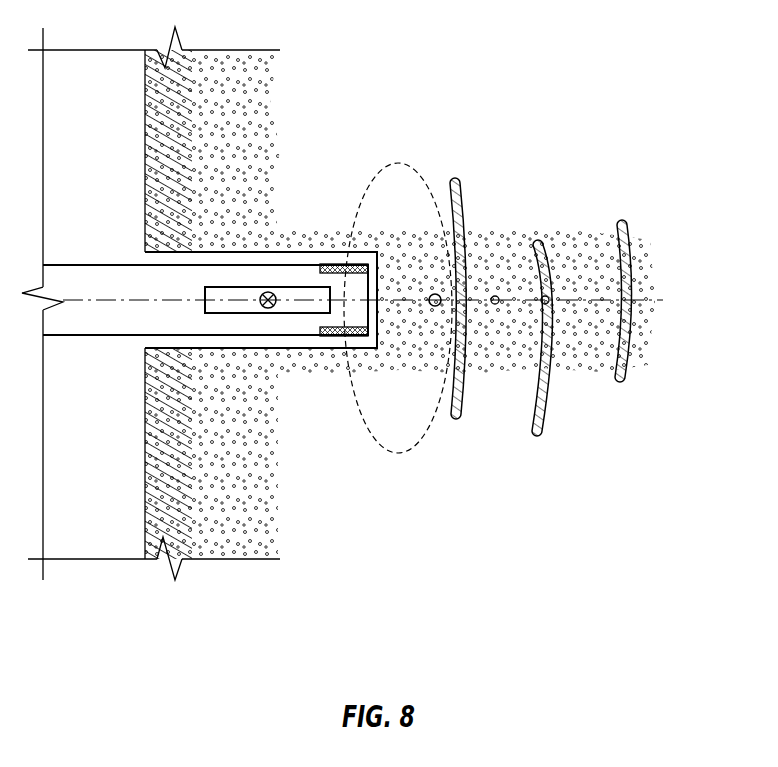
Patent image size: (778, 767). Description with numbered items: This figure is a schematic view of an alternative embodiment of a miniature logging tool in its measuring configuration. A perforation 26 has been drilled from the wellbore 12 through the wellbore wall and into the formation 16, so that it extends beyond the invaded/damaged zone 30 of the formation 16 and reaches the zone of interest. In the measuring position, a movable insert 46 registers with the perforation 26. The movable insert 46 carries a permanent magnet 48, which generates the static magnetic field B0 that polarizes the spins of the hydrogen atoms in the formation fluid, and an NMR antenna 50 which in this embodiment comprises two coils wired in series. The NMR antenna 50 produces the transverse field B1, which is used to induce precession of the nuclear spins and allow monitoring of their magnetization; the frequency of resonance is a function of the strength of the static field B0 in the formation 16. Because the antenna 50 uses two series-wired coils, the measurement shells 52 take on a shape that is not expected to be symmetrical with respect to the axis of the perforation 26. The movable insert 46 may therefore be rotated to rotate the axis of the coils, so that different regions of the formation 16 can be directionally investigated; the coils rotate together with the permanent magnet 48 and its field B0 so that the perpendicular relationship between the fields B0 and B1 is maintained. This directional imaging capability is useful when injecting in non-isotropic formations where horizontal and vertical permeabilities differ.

The wellbore 12 is at (111, 156).
The formation 16 is at (246, 119).
The perforation 26 is at (143, 258).
The invaded/damaged zone 30 is at (166, 471).
The movable insert 46 is at (101, 332).
The permanent magnet 48 is at (246, 288).
The NMR antenna 50 is at (362, 263).
The measurement shells 52 is at (457, 184).
The transverse field B1 is at (348, 240).
The static magnetic field B0 is at (543, 303).